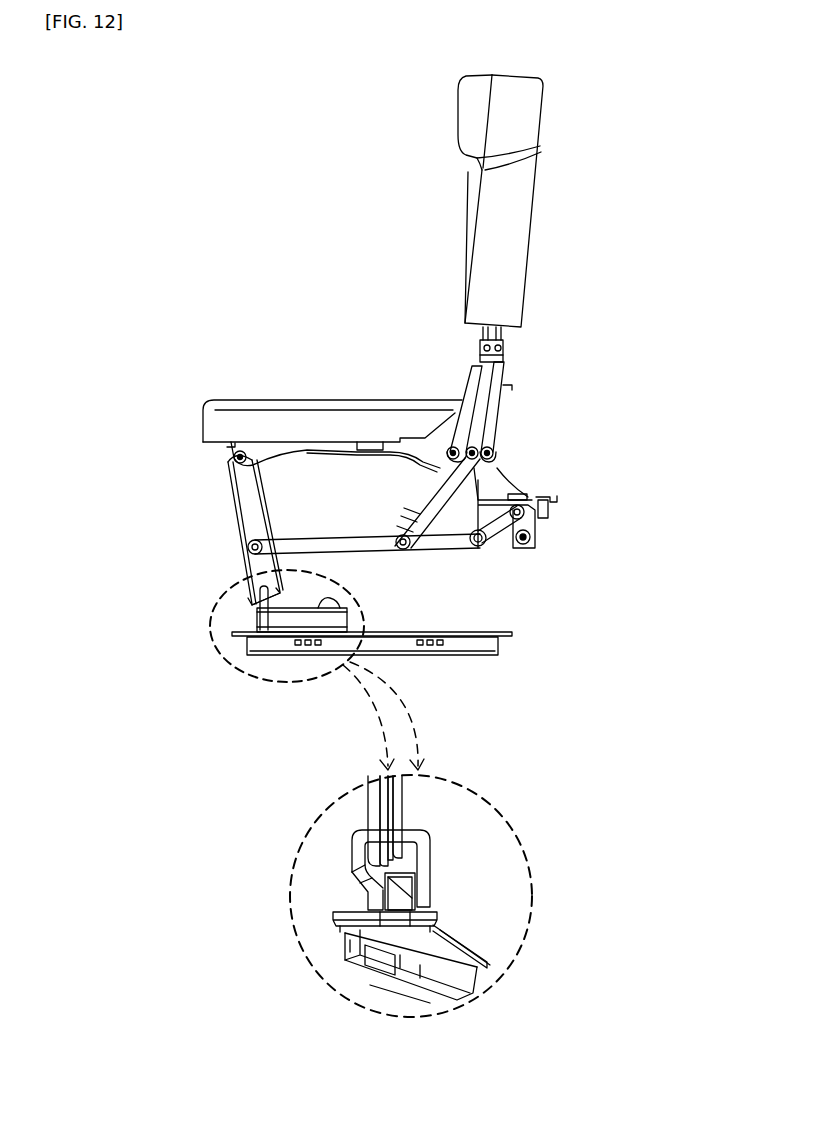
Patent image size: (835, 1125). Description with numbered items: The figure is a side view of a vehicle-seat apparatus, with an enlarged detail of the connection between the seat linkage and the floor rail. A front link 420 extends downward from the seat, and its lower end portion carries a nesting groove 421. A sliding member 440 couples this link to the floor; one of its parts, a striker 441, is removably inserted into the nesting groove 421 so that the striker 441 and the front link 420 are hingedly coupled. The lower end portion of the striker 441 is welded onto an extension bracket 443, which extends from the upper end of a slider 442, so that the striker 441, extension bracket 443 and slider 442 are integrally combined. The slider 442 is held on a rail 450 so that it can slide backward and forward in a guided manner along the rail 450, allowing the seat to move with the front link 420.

The front link 420 is at (247, 504).
The nesting groove 421 is at (255, 575).
The sliding member 440 is at (290, 710).
The striker 441 is at (267, 598).
The slider 442 is at (475, 928).
The extension bracket 443 is at (327, 600).
The rail 450 is at (252, 660).